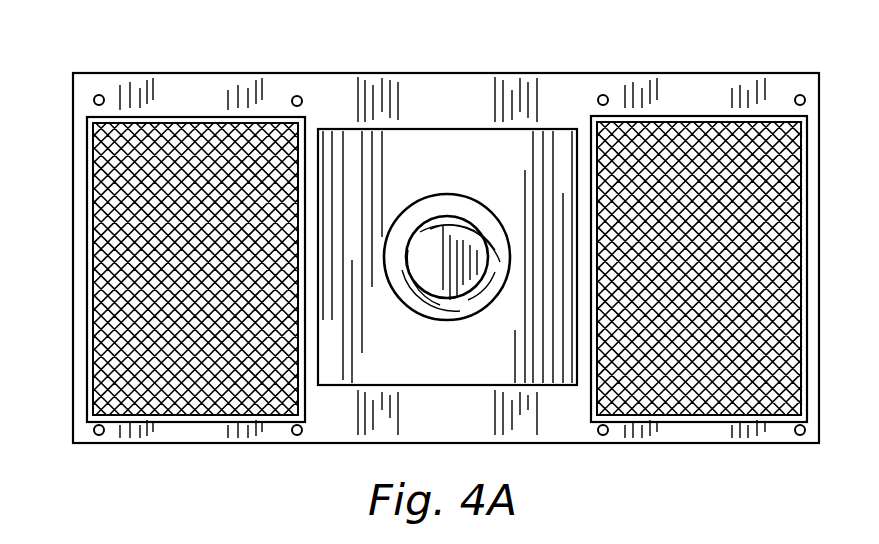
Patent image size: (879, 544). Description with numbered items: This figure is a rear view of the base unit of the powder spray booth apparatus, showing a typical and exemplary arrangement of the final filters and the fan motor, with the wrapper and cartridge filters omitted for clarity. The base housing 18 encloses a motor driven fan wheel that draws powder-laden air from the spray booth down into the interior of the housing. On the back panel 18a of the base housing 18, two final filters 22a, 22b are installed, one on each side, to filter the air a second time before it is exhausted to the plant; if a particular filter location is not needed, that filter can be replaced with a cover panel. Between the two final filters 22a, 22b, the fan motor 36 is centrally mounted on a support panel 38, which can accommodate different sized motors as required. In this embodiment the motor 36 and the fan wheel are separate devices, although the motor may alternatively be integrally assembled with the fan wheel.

The base housing 18 is at (73, 258).
The back panel 18a is at (325, 100).
The final filter 22a is at (197, 158).
The final filter 22b is at (702, 183).
The fan motor 36 is at (437, 250).
The support panel 38 is at (525, 177).